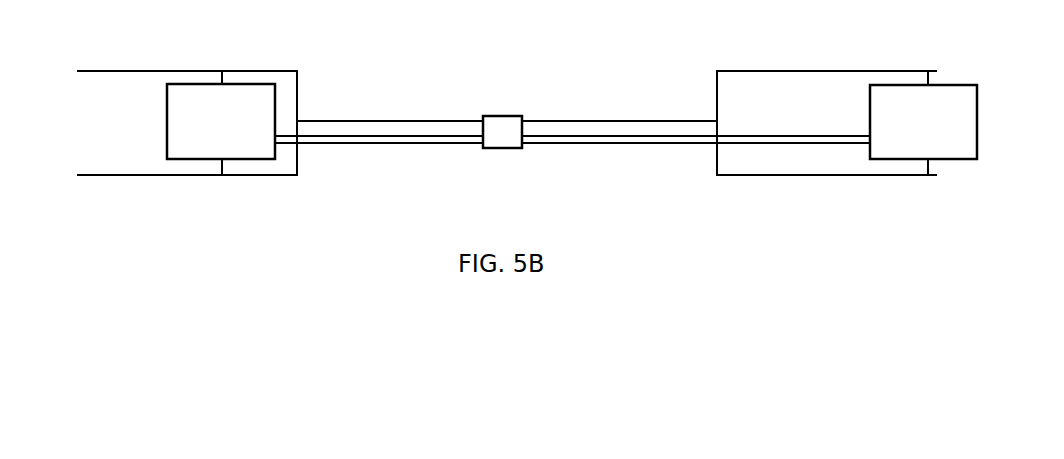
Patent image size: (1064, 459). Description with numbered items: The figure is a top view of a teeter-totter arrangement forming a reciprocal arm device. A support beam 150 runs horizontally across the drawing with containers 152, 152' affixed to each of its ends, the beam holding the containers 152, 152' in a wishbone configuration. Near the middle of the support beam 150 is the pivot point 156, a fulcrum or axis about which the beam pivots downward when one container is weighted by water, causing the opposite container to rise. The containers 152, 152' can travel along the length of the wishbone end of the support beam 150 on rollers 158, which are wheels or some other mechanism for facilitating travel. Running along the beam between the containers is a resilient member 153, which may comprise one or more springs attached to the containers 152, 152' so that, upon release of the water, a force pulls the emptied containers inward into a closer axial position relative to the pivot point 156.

The support beam 150 is at (387, 121).
The container 152 is at (172, 121).
The container 152' is at (961, 122).
The resilient member 153 is at (565, 143).
The pivot point 156 is at (503, 116).
The rollers 158 is at (930, 79).